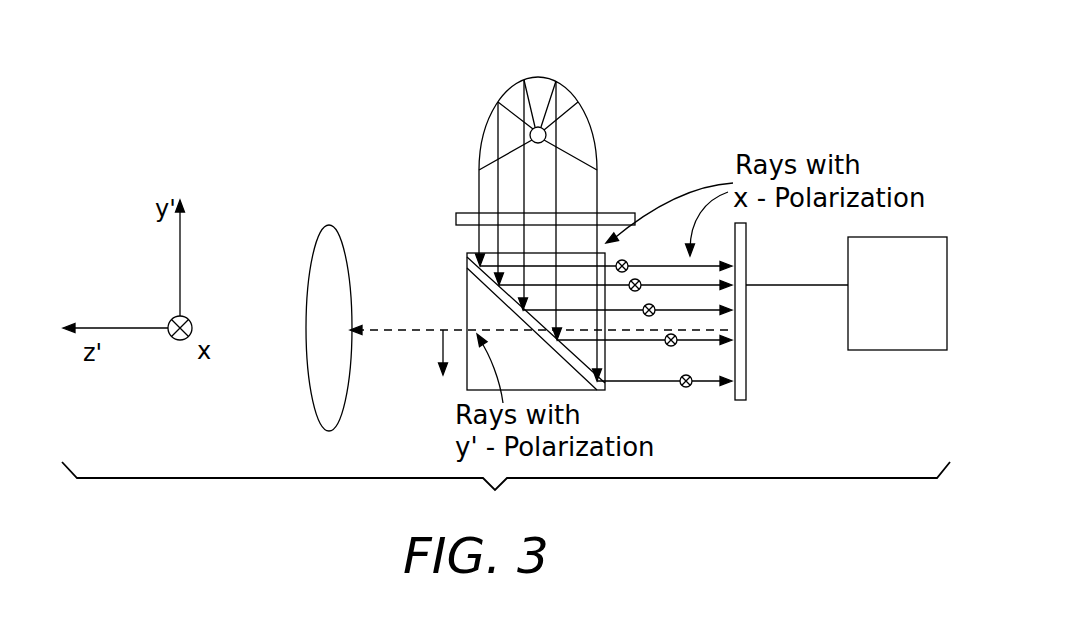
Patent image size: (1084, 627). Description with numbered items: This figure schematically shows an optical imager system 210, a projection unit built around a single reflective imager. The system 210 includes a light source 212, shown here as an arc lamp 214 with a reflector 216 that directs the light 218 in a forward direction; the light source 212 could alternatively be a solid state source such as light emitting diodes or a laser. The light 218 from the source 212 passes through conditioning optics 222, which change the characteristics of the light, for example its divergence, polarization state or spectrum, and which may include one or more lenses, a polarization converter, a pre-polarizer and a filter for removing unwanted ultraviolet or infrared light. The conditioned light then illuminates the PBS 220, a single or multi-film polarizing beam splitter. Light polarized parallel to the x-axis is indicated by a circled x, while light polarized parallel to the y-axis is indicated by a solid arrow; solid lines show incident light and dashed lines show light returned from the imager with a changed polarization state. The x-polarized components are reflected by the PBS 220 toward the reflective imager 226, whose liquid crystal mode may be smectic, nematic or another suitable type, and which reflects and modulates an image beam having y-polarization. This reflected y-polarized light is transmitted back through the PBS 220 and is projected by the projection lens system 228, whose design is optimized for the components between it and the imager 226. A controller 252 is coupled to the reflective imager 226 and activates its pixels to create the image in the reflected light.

The optical imager system 210 is at (706, 124).
The light source 212 is at (497, 137).
The arc lamp 214 is at (543, 129).
The reflector 216 is at (512, 90).
The light 218 is at (470, 180).
The PBS 220 is at (467, 282).
The conditioning optics 222 is at (618, 212).
The reflective imager 226 is at (746, 341).
The projection lens system 228 is at (313, 390).
The controller 252 is at (878, 351).